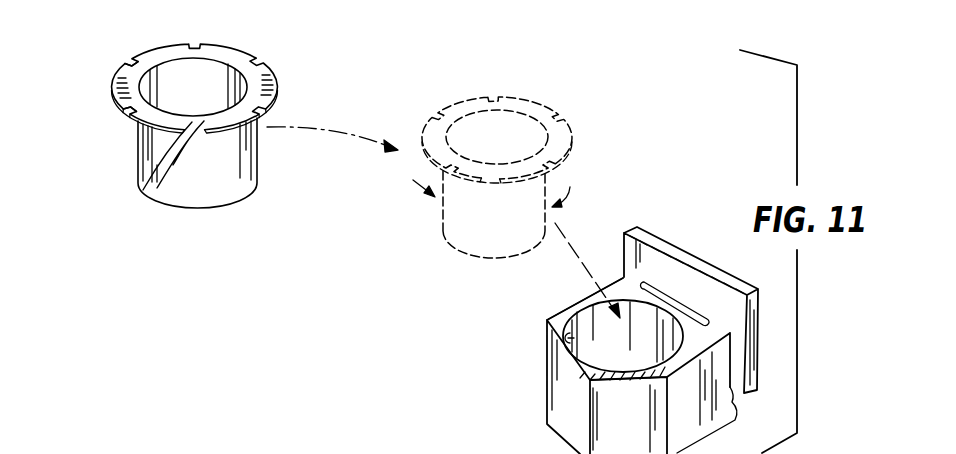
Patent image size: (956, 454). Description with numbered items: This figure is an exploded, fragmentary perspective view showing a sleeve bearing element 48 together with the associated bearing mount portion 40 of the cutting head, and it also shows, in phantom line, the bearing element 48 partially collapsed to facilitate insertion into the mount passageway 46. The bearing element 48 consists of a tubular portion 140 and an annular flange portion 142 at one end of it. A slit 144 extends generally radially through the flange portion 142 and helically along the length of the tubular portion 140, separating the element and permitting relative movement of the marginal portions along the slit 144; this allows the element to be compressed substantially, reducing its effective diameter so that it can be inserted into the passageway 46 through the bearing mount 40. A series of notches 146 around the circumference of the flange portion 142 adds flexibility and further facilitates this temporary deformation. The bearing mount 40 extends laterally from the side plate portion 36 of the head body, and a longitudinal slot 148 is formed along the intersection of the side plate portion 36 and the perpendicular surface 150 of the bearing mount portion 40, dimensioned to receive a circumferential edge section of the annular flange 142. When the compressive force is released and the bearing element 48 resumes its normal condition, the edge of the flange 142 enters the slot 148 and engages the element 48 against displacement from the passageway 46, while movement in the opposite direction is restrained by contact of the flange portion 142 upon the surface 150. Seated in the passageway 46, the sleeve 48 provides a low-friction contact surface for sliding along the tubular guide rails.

The side plate portion 36 is at (708, 291).
The bearing mount portion 40 is at (639, 322).
The passageway 46 is at (575, 341).
The bearing sleeve element 48 is at (341, 161).
The tubular portion 140 is at (217, 188).
The annular flange portion 142 is at (169, 50).
The slit 144 is at (188, 210).
The notches 146 is at (130, 108).
The longitudinal slot 148 is at (707, 322).
The perpendicular surface 150 is at (580, 303).